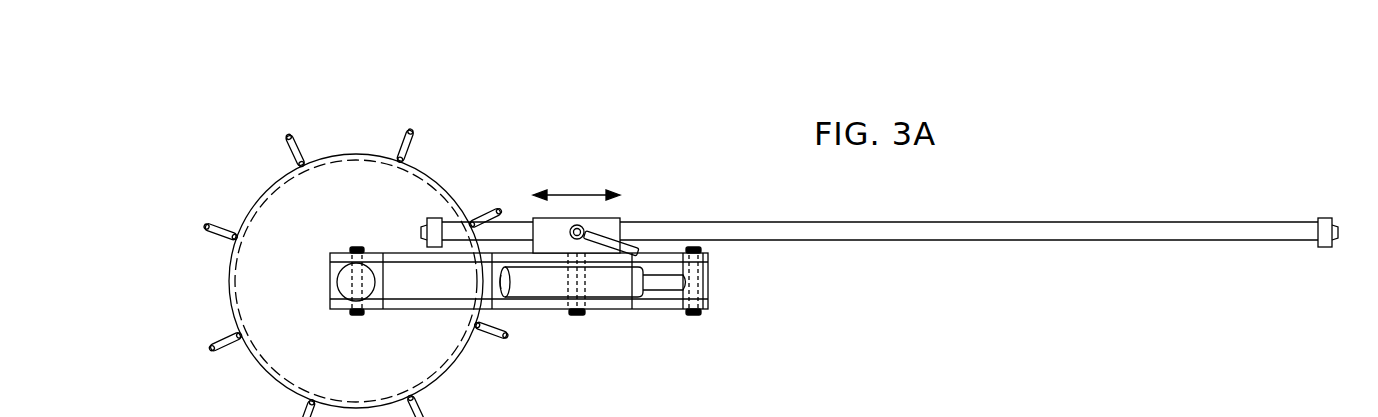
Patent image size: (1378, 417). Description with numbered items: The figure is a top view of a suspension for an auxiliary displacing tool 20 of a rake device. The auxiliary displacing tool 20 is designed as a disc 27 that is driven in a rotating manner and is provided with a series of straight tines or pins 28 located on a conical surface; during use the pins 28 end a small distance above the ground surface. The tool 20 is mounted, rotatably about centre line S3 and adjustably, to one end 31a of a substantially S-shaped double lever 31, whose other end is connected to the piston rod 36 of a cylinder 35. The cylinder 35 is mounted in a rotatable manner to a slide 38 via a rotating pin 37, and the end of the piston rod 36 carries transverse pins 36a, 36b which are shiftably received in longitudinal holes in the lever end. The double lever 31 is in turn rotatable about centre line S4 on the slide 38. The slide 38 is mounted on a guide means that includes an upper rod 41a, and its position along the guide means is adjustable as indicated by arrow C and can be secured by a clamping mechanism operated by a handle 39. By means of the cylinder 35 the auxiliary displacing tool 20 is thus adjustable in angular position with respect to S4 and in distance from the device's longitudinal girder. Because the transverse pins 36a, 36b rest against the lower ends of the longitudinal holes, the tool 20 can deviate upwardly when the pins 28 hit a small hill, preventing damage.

The auxiliary displacing tool 20 is at (324, 227).
The disc 27 is at (275, 349).
The pins 28 is at (318, 244).
The double lever 31 is at (507, 305).
The end of the double lever 31a is at (440, 416).
The cylinder 35 is at (605, 282).
The piston rod 36 is at (667, 282).
The transverse pin 36a is at (693, 253).
The transverse pin 36b is at (693, 315).
The rotating pin 37 is at (582, 314).
The slide 38 is at (547, 252).
The handle 39 is at (622, 247).
The upper rod 41a is at (1227, 235).
The centre line S3 is at (357, 315).
The centre line S4 is at (577, 315).
The arrow C is at (576, 181).